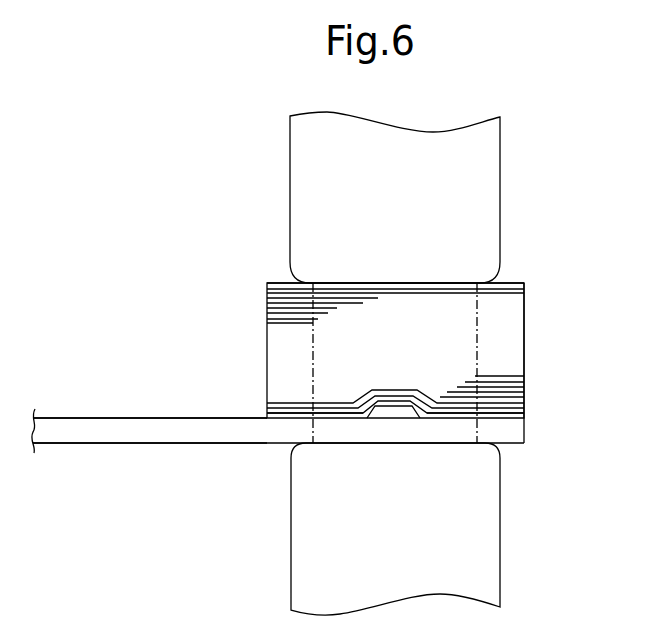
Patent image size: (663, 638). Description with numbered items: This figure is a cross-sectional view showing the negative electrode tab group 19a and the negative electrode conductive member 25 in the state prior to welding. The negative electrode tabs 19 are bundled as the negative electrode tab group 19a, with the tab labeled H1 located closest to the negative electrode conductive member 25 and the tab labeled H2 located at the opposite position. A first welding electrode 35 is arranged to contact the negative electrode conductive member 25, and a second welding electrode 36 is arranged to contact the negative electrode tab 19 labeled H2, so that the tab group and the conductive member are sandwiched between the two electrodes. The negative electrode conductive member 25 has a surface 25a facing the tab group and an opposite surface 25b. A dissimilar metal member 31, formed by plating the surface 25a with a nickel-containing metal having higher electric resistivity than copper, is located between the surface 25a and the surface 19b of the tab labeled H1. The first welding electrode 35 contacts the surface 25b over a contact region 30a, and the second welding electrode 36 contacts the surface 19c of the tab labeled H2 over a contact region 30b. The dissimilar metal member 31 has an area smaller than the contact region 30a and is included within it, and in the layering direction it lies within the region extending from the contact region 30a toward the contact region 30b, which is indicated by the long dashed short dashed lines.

The negative electrode tab 19 is at (524, 410).
The negative electrode tab group 19a is at (524, 345).
The surface of the negative electrode tab (H1) 19b is at (490, 415).
The surface of the negative electrode tab (H2) 19c is at (506, 283).
The negative electrode conductive member 25 is at (524, 436).
The surface of the negative electrode conductive member 25a is at (190, 417).
The surface of the negative electrode conductive member 25b is at (118, 445).
The contact region 30a is at (313, 443).
The contact region 30b is at (477, 297).
The dissimilar metal member 31 is at (397, 408).
The first welding electrode 35 is at (500, 565).
The second welding electrode 36 is at (500, 154).